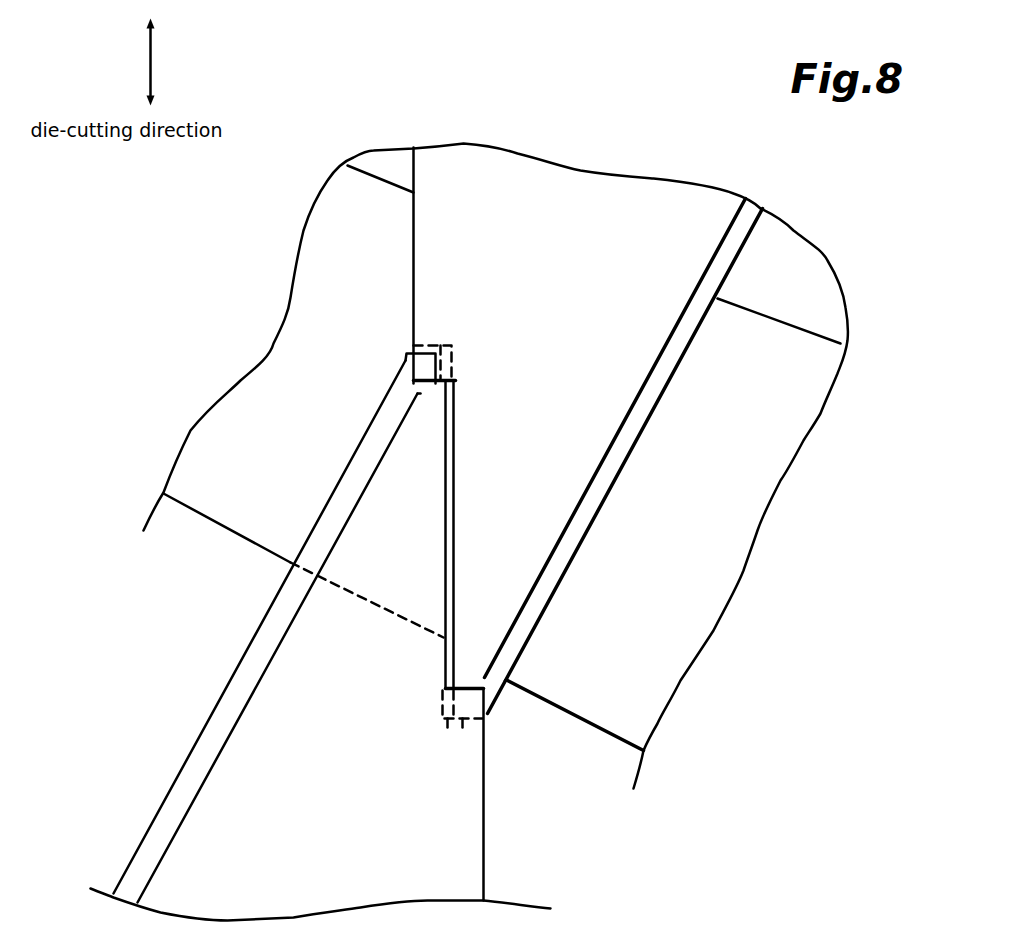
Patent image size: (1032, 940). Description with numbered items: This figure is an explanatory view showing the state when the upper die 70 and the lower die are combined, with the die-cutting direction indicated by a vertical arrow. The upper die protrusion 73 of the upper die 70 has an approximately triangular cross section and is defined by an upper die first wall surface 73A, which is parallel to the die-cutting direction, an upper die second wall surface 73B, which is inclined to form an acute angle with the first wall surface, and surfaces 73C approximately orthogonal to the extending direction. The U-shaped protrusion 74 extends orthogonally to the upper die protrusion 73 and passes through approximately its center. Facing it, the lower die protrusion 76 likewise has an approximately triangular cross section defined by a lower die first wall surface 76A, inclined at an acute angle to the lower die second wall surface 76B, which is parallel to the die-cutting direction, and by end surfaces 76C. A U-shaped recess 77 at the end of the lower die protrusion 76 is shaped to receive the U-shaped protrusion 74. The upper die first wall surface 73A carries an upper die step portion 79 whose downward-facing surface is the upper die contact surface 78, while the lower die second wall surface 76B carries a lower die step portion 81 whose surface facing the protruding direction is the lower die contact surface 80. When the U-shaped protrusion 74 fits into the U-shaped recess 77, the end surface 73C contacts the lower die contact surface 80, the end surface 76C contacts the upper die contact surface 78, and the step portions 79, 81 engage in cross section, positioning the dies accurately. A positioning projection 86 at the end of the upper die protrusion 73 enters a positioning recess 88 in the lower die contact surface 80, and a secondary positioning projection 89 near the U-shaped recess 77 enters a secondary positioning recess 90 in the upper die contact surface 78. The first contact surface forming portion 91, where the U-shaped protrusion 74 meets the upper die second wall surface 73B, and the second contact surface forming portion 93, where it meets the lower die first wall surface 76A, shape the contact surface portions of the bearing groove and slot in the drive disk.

The upper die 70 is at (800, 277).
The upper die protrusion 73 is at (560, 227).
The upper die first wall surface 73A is at (413, 223).
The upper die second wall surface 73B is at (742, 248).
The end surface of upper die protrusion 73C is at (488, 690).
The U-shaped protrusion 74 is at (693, 535).
The lower die protrusion 76 is at (450, 867).
The lower die first wall surface 76A is at (190, 755).
The lower die second wall surface 76B is at (485, 815).
The end surface of lower die protrusion 76C is at (417, 376).
The U-shaped recess 77 is at (377, 605).
The upper die contact surface 78 is at (440, 396).
The upper die step portion 79 is at (466, 367).
The lower die contact surface 80 is at (483, 688).
The lower die step portion 81 is at (420, 682).
The positioning projection 86 is at (462, 730).
The positioning recess 88 is at (447, 730).
The secondary positioning projection 89 is at (443, 345).
The secondary positioning recess 90 is at (430, 345).
The first contact surface forming portion 91 is at (510, 690).
The second contact surface forming portion 93 is at (284, 563).